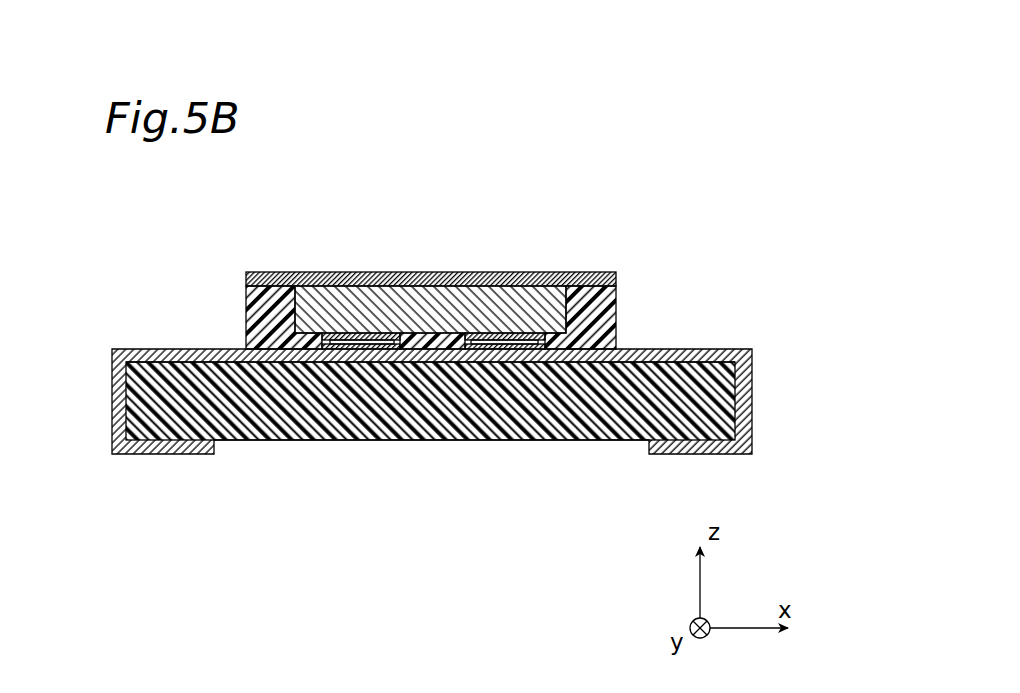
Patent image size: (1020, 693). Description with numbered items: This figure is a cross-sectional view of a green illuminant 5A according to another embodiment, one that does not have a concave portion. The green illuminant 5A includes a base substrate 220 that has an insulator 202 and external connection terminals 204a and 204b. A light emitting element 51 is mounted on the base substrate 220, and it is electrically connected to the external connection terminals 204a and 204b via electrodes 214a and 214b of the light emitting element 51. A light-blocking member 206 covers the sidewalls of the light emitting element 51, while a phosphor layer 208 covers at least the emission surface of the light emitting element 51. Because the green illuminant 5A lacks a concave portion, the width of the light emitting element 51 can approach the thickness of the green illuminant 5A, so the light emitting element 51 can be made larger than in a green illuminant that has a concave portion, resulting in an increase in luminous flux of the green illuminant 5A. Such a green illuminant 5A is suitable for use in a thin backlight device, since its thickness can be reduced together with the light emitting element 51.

The green illuminant 5A is at (435, 359).
The light-blocking member 206 is at (255, 276).
The phosphor layer 208 is at (469, 286).
The light emitting element 51 is at (440, 292).
The electrode 214a is at (362, 333).
The electrode 214b is at (506, 333).
The external connection terminal 204a is at (226, 362).
The external connection terminal 204b is at (635, 365).
The insulator 202 is at (440, 440).
The base substrate 220 is at (588, 498).